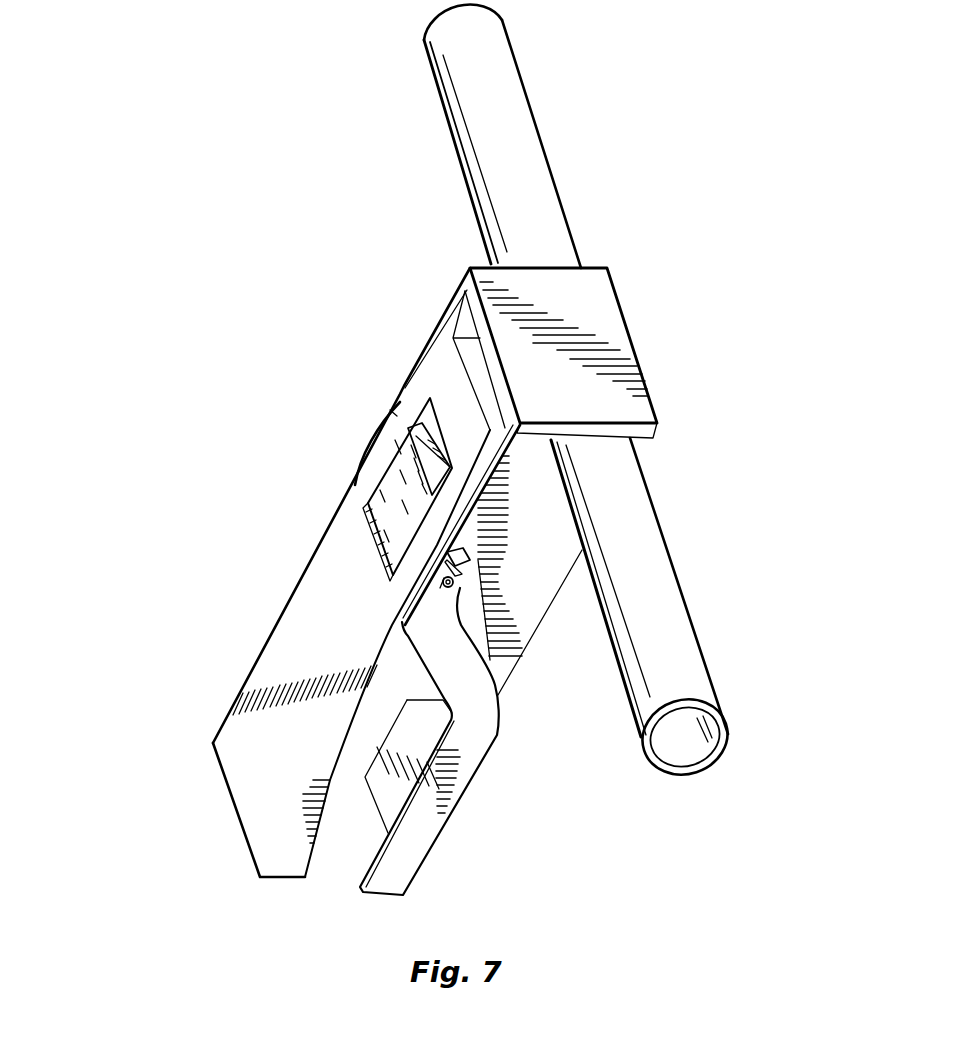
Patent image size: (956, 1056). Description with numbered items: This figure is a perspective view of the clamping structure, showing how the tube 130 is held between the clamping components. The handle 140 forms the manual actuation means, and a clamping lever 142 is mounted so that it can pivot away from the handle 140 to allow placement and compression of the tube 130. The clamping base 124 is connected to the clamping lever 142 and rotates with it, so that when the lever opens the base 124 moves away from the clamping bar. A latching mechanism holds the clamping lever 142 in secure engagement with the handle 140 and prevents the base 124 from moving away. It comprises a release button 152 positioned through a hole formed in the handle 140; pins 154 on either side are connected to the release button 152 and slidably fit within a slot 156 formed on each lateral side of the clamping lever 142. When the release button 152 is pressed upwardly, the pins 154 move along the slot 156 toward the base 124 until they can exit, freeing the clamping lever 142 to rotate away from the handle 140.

The clamping base 124 is at (605, 327).
The tube 130 is at (668, 632).
The handle 140 is at (258, 758).
The clamping lever 142 is at (402, 858).
The release button 152 is at (403, 453).
The pins 154 is at (460, 588).
The slot 156 is at (467, 563).